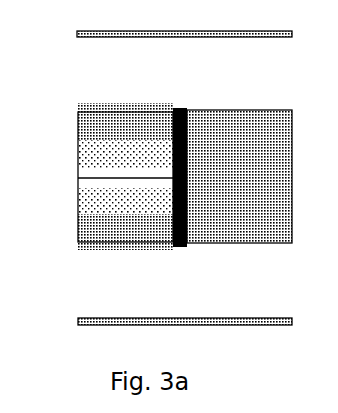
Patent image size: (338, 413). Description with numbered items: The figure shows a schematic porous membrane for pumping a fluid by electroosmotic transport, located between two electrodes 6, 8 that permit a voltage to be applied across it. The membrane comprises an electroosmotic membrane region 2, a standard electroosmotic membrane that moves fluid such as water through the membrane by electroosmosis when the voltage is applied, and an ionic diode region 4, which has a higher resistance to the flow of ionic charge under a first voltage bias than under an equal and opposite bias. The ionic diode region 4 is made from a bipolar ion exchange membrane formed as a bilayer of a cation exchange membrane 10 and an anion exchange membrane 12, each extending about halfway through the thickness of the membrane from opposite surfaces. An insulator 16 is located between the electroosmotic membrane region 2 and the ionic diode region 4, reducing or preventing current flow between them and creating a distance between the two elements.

The electroosmotic membrane region 2 is at (270, 123).
The ionic diode region 4 is at (178, 173).
The electrode 6 is at (240, 31).
The electrode 8 is at (240, 325).
The cation exchange membrane 10 is at (105, 118).
The anion exchange membrane 12 is at (125, 236).
The insulator 16 is at (188, 110).